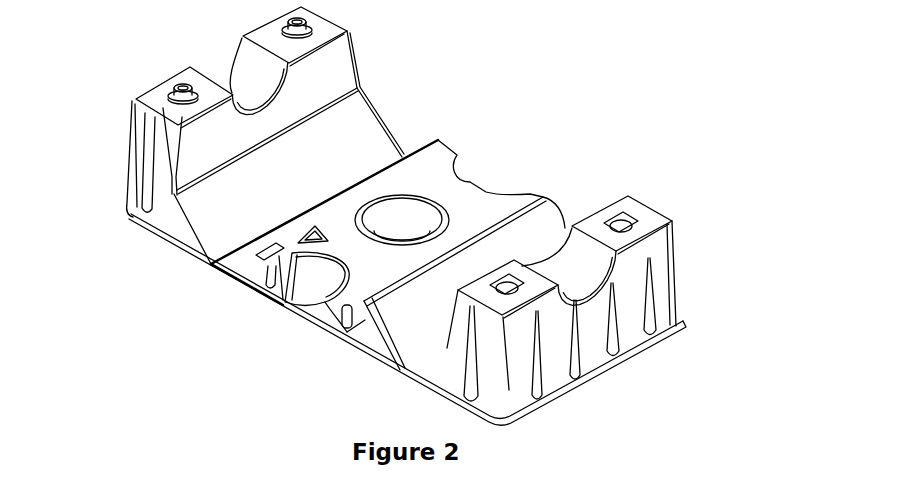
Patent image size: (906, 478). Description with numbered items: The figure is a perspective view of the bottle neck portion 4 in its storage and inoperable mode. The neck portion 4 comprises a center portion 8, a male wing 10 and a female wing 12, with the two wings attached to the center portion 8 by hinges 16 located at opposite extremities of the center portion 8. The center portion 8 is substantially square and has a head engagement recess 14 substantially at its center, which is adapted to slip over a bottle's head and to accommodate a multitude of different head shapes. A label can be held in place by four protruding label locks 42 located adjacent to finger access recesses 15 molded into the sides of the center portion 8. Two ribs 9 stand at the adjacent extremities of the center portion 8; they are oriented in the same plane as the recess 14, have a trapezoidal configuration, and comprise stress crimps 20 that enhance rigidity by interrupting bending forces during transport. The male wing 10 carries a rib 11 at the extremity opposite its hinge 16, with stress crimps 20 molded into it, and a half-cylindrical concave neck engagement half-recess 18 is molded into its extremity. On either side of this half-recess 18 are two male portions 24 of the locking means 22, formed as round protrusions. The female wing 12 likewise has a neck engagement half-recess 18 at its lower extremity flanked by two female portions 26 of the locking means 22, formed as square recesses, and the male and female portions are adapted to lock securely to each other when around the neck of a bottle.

The neck portion 4 is at (400, 216).
The center portion 8 is at (376, 245).
The rib 9 is at (362, 323).
The male wing 10 is at (226, 135).
The rib 11 is at (137, 165).
The female wing 12 is at (660, 218).
The head engagement recess 14 is at (402, 247).
The finger access recess 15 is at (320, 280).
The hinge 16 is at (300, 217).
The neck engagement half-recess 18 is at (229, 72).
The stress crimp 20 is at (143, 210).
The locking means 22 is at (150, 98).
The male portion 24 is at (297, 22).
The female portion 26 is at (620, 228).
The label lock 42 is at (275, 253).